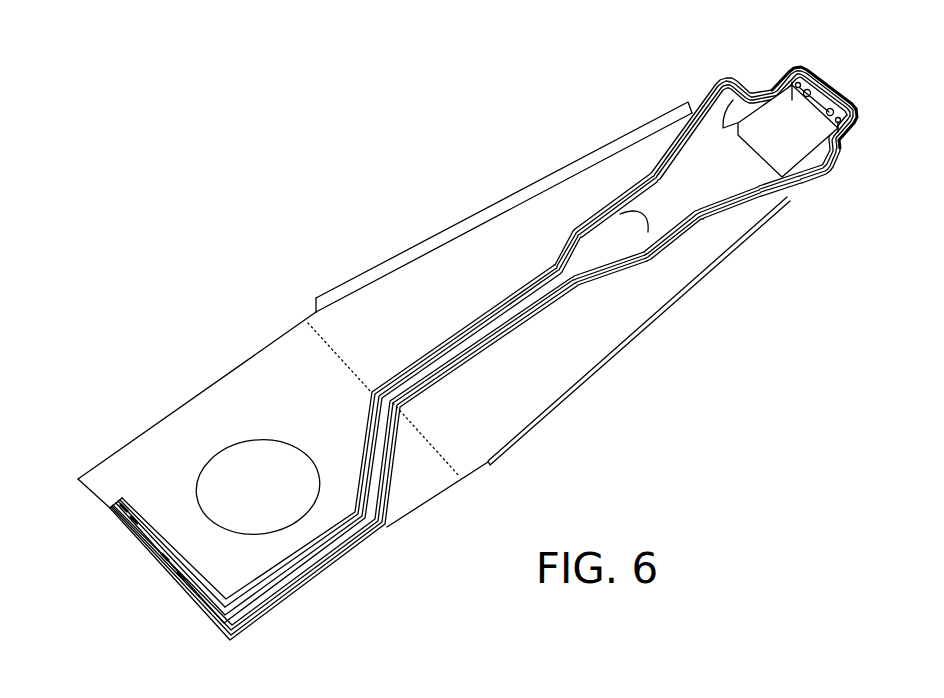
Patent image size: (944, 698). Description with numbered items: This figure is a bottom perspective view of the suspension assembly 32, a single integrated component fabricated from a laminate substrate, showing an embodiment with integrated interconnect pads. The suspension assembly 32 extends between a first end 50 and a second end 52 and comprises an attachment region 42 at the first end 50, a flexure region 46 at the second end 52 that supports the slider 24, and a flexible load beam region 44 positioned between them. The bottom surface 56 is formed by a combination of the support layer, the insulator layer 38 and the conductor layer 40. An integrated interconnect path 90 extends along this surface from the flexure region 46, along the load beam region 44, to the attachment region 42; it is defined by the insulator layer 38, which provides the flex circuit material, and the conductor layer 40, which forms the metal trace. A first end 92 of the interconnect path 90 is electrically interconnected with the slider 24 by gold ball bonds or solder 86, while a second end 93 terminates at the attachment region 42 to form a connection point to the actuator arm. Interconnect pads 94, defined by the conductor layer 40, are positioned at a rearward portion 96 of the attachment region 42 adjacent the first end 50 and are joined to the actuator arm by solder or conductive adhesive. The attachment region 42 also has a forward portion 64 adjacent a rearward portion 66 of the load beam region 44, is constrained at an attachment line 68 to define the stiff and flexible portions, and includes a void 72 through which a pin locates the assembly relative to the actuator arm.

The slider 24 is at (792, 148).
The suspension assembly 32 is at (117, 342).
The insulator layer 38 is at (480, 333).
The conductor layer 40 is at (475, 350).
The attachment region 42 is at (168, 445).
The load beam region 44 is at (422, 320).
The flexure region 46 is at (833, 98).
The first end 50 is at (93, 490).
The second end 52 is at (823, 71).
The bottom surface 56 is at (485, 243).
The forward portion 64 is at (305, 348).
The rearward portion 66 is at (332, 327).
The attachment line 68 is at (437, 453).
The void 72 is at (245, 452).
The solder 86 is at (770, 83).
The interconnect path 90 is at (678, 248).
The first end 92 is at (852, 110).
The second end 93 is at (145, 540).
The interconnect pads 94 is at (133, 521).
The rearward portion 96 is at (102, 487).